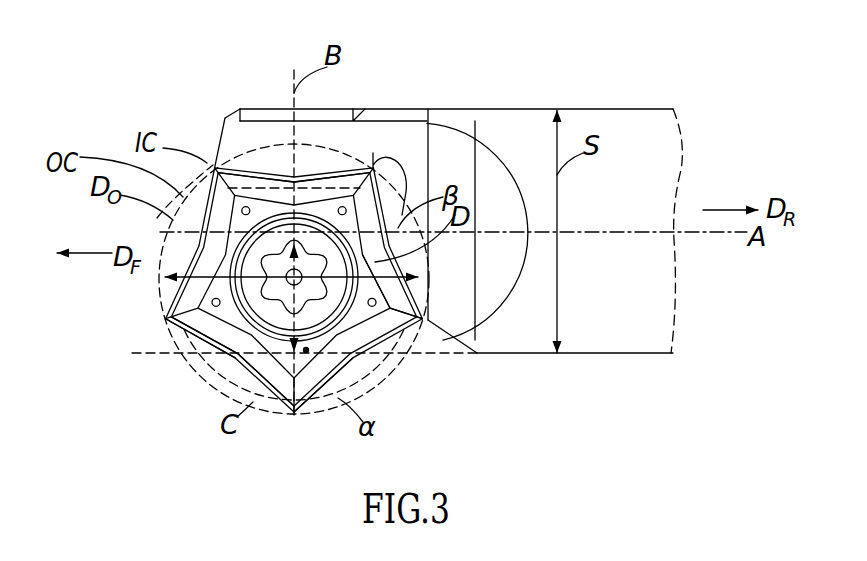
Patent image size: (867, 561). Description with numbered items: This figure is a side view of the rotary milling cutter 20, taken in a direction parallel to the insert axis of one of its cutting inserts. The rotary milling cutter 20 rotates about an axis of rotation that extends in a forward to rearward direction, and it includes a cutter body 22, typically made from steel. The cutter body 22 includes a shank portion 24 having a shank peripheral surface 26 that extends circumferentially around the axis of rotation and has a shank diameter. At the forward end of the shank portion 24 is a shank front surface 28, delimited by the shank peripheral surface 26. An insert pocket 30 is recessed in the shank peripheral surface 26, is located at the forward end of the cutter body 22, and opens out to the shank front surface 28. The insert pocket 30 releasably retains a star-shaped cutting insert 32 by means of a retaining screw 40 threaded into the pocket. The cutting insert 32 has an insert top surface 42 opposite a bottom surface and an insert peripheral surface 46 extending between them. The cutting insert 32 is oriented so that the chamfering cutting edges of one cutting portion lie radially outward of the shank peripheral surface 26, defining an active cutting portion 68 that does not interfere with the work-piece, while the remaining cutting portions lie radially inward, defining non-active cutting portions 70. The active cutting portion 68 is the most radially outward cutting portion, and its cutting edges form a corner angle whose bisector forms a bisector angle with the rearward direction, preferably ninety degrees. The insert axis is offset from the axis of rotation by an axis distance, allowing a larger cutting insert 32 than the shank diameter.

The rotary milling cutter 20 is at (110, 118).
The cutter body 22 is at (642, 75).
The shank portion 24 is at (628, 360).
The shank peripheral surface 26 is at (597, 315).
The shank front surface 28 is at (195, 135).
The insert pocket 30 is at (137, 315).
The cutting insert 32 is at (320, 150).
The retaining screw 40 is at (215, 356).
The insert top surface 42 is at (392, 322).
The insert peripheral surface 46 is at (183, 352).
The active cutting portion 68 is at (337, 388).
The non-active cutting portions 70 is at (245, 155).